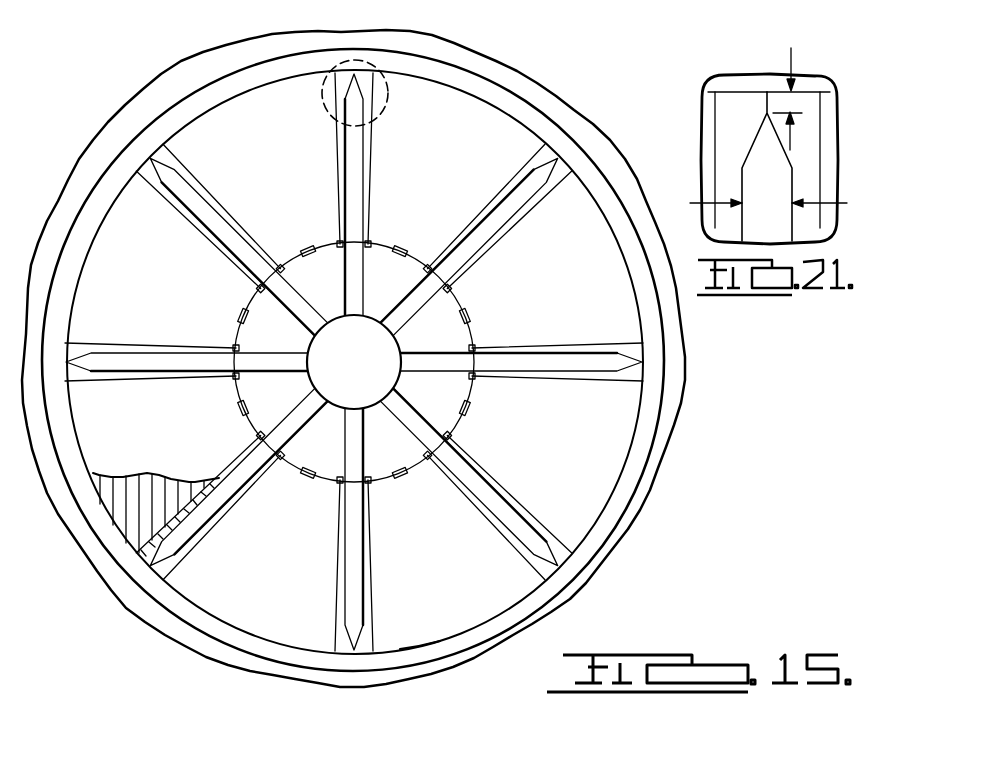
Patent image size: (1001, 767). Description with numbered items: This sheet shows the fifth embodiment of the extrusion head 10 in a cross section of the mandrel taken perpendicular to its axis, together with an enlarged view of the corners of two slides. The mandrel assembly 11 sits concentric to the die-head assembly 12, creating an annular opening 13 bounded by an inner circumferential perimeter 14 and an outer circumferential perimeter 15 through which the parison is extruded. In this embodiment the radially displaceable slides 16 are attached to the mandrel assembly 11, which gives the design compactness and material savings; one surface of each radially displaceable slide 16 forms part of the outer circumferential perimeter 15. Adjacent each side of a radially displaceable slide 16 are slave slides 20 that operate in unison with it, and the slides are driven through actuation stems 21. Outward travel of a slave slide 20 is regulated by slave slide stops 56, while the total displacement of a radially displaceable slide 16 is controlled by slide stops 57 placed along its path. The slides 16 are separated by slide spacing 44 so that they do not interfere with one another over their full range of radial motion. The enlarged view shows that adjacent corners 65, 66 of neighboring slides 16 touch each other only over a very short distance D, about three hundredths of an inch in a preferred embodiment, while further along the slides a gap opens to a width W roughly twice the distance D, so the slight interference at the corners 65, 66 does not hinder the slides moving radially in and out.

In FIG. 15, the wheel 10 is at (363, 375).
In FIG. 15, the mandrel assembly 11 is at (445, 338).
In FIG. 15, the die-head assembly 12 is at (640, 520).
In FIG. 15, the annular opening 13 is at (412, 667).
In FIG. 21, the annular opening 13 is at (745, 83).
In FIG. 15, the inner circumferential perimeter 14 is at (485, 642).
In FIG. 15, the outer circumferential perimeter 15 is at (427, 650).
In FIG. 15, the radially displaceable slide 16 is at (227, 587).
In FIG. 15, the slave slide 20 is at (337, 497).
In FIG. 21, the slave slide 20 is at (727, 223).
In FIG. 15, the actuation stem 21 is at (395, 91).
In FIG. 15, the slide spacing 44 is at (357, 545).
In FIG. 21, the slide spacing 44 is at (777, 233).
In FIG. 15, the slave slide stop 56 is at (253, 297).
In FIG. 15, the slide stop 57 is at (240, 408).
In FIG. 21, the adjacent corner of slide 65 is at (750, 102).
In FIG. 21, the adjacent corner of slide 66 is at (778, 103).
In FIG. 21, the distance D is at (787, 87).
In FIG. 21, the width W is at (773, 192).